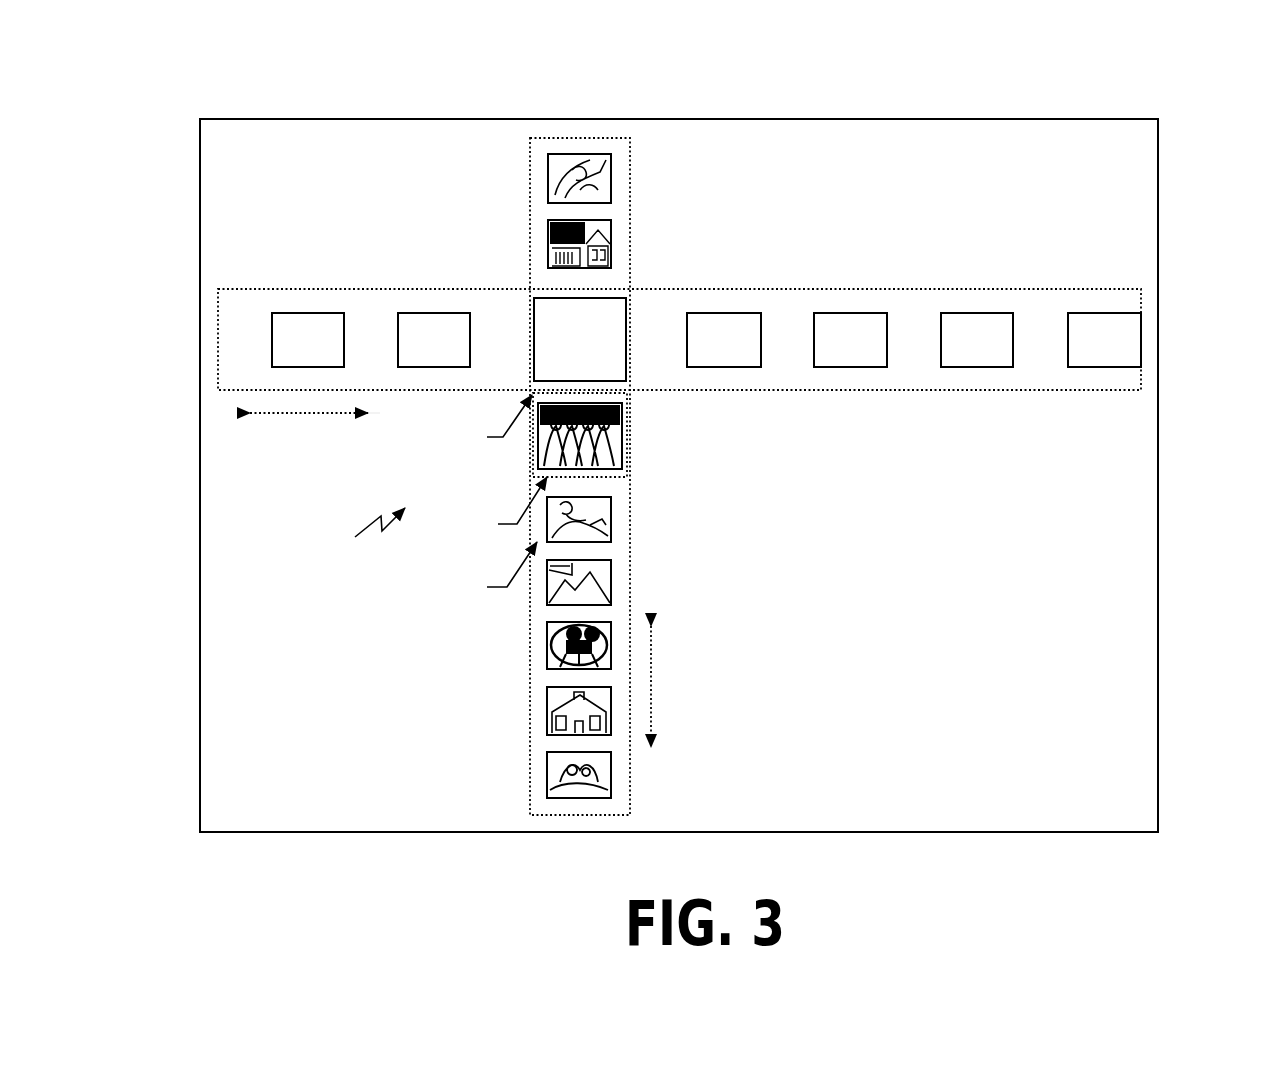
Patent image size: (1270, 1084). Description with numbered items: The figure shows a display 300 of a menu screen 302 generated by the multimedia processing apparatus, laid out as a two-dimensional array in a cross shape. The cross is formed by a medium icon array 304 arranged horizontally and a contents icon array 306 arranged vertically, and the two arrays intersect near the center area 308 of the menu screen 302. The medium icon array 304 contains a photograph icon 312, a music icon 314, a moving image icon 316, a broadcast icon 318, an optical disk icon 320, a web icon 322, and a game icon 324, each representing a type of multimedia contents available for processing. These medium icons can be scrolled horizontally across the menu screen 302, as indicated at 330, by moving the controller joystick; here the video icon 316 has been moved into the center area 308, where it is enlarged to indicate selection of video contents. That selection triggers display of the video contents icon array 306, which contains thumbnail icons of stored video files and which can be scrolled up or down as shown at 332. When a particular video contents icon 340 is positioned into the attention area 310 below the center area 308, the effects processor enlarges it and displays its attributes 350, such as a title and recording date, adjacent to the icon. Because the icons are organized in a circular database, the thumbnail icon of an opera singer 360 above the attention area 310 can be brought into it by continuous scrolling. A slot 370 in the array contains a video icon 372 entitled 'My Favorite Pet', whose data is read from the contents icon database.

The display 300 is at (960, 119).
The menu screen 302 is at (362, 540).
The medium icon array 304 is at (1142, 298).
The contents icon array 306 is at (580, 138).
The center area 308 is at (485, 423).
The attention area 310 is at (498, 508).
The photograph icon 312 is at (307, 313).
The music icon 314 is at (435, 313).
The moving image icon 316 is at (598, 298).
The broadcast icon 318 is at (728, 313).
The optical disk icon 320 is at (850, 313).
The web icon 322 is at (977, 313).
The game icon 324 is at (1105, 367).
The horizontal scrolling of medium icons 330 is at (290, 413).
The vertical scrolling of contents icons 332 is at (651, 690).
The video contents icon 340 is at (620, 457).
The attributes 350 is at (838, 465).
The thumbnail icon of an opera singer 360 is at (613, 180).
The slot 370 is at (489, 572).
The video icon 372 is at (610, 520).